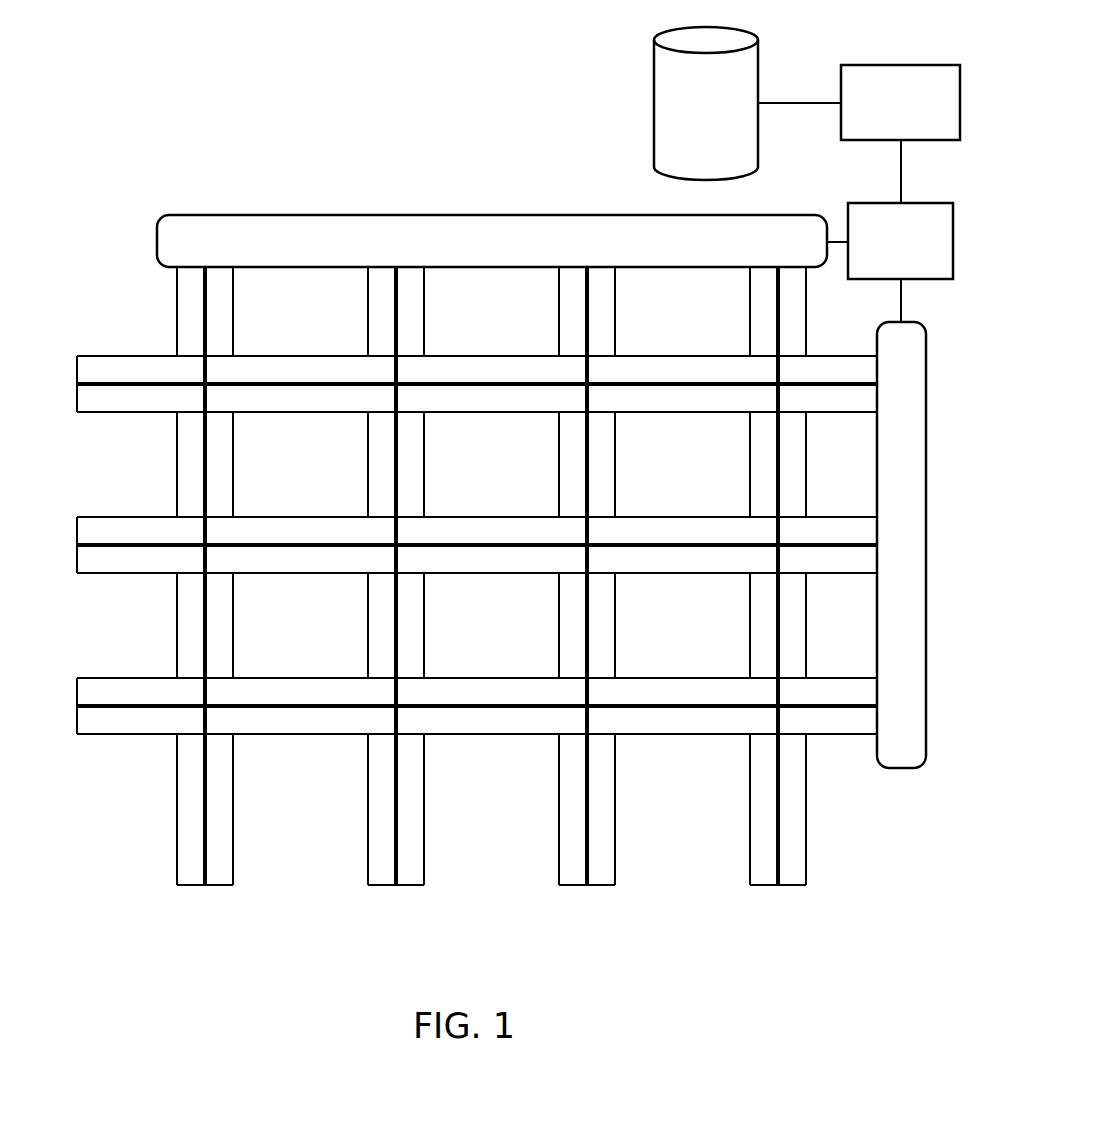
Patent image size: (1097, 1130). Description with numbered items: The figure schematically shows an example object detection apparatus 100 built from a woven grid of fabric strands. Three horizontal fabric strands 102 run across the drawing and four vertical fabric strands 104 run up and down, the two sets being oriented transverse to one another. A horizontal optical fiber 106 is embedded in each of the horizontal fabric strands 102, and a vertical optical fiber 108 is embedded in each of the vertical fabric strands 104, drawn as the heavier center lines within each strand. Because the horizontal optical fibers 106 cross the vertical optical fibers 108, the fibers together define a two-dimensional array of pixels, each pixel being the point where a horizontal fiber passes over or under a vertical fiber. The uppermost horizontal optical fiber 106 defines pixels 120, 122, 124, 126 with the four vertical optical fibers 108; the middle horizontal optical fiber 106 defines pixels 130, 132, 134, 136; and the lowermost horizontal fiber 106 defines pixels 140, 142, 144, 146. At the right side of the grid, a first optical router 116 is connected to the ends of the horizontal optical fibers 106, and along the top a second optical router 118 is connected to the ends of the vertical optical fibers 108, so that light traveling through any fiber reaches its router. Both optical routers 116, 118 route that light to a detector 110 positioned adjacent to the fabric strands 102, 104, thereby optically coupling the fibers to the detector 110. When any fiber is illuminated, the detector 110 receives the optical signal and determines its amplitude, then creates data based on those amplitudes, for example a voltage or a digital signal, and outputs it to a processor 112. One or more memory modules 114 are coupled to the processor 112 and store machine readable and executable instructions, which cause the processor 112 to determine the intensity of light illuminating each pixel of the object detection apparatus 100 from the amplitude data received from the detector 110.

The object detection apparatus 100 is at (205, 147).
The horizontal fabric strands 102 is at (77, 402).
The vertical fabric strands 104 is at (220, 887).
The horizontal optical fibers 106 is at (108, 381).
The vertical optical fibers 108 is at (203, 868).
The detector 110 is at (925, 203).
The processor 112 is at (900, 65).
The memory modules 114 is at (654, 103).
The first optical router 116 is at (900, 769).
The second optical router 118 is at (492, 215).
The pixel 120 is at (200, 385).
The pixel 122 is at (391, 385).
The pixel 124 is at (582, 385).
The pixel 126 is at (773, 385).
The pixel 130 is at (200, 546).
The pixel 132 is at (391, 546).
The pixel 134 is at (582, 546).
The pixel 136 is at (773, 546).
The pixel 140 is at (200, 707).
The pixel 142 is at (391, 707).
The pixel 144 is at (582, 707).
The pixel 146 is at (773, 707).